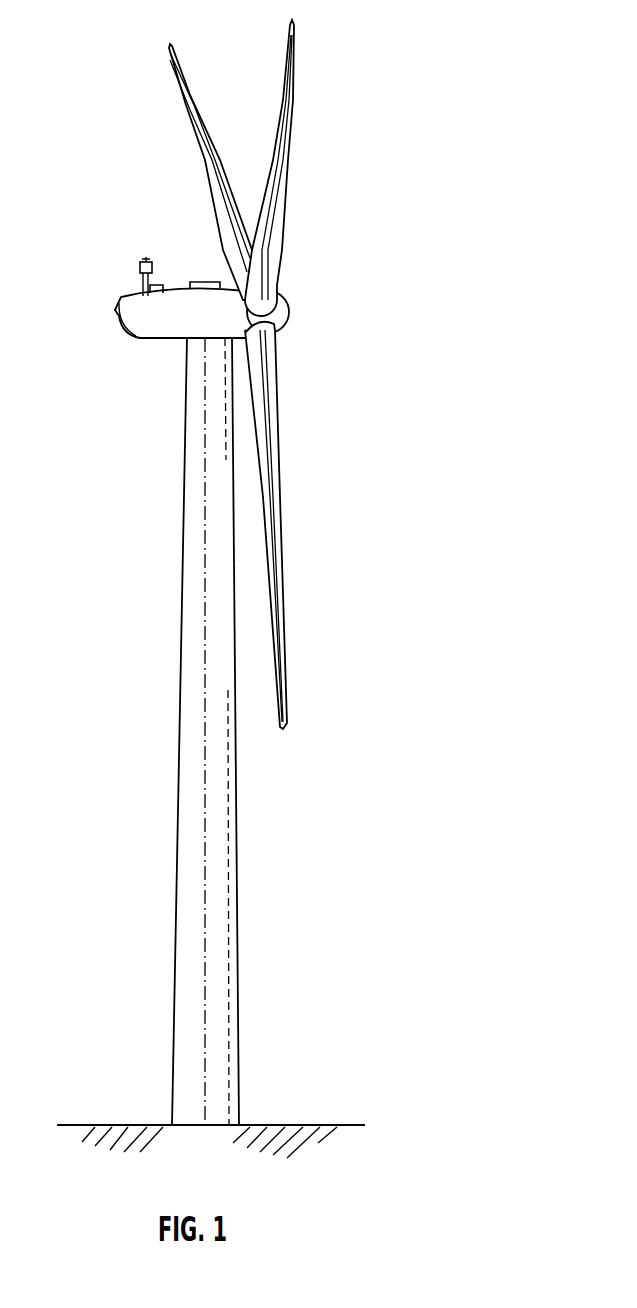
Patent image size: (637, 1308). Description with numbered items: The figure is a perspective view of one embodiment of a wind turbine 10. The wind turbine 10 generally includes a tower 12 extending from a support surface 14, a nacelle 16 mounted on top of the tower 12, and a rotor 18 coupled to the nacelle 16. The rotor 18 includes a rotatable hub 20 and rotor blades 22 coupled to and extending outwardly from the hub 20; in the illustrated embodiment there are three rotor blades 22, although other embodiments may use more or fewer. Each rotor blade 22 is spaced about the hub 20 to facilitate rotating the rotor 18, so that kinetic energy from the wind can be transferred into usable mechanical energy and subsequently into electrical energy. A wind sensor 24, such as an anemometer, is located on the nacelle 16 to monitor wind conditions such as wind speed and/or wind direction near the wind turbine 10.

The wind turbine 10 is at (412, 100).
The tower 12 is at (192, 795).
The support surface 14 is at (130, 1125).
The nacelle 16 is at (152, 340).
The rotor 18 is at (297, 290).
The rotatable hub 20 is at (290, 312).
The rotor blade 22 is at (282, 88).
The wind sensor 24 is at (128, 258).